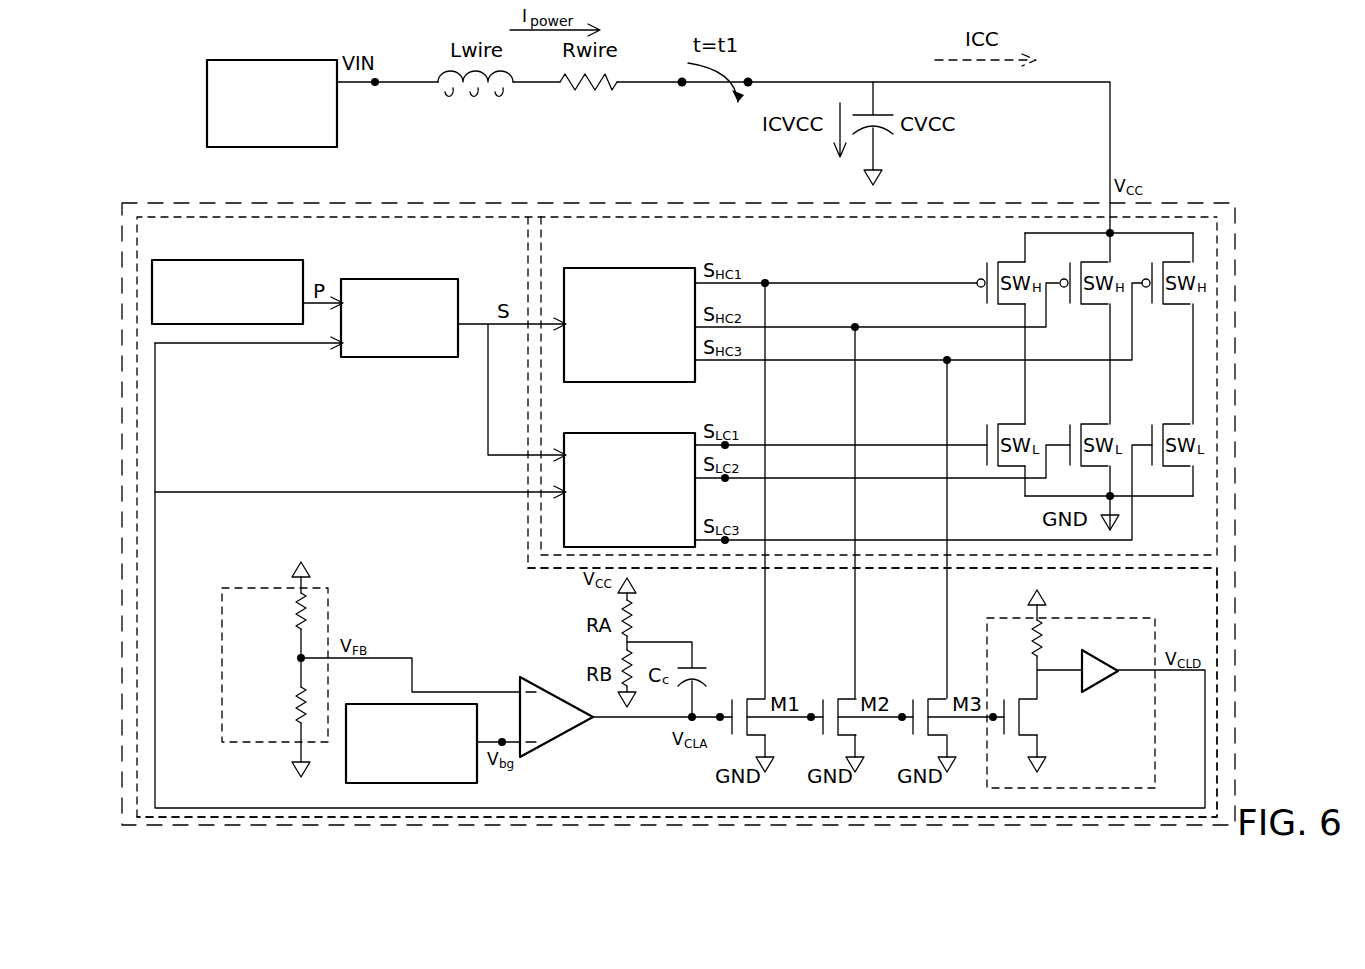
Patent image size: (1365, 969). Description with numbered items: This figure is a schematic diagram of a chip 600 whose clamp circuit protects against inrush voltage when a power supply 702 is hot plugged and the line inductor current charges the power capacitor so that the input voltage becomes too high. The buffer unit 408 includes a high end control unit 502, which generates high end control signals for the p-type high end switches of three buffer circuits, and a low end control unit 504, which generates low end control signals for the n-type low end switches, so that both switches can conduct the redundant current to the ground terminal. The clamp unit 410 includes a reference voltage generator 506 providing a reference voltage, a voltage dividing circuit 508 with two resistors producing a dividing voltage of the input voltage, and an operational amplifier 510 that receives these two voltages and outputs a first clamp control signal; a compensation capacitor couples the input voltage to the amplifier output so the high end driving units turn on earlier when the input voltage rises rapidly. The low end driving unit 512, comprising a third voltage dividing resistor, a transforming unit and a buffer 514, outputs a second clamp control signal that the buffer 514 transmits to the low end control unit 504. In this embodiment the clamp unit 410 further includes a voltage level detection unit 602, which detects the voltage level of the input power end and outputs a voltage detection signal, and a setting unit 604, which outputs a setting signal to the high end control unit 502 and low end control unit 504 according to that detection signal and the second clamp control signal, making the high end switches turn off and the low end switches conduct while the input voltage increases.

The power supply 702 is at (275, 60).
The chip 600 is at (1236, 335).
The buffer unit 408 is at (1220, 385).
The clamp unit 410 is at (1220, 590).
The voltage level detection unit 602 is at (225, 260).
The setting unit 604 is at (393, 279).
The high end control unit 502 is at (630, 268).
The low end control unit 504 is at (630, 433).
The reference voltage generator 506 is at (413, 783).
The voltage dividing circuit 508 is at (222, 677).
The operational amplifier 510 is at (550, 682).
The low end driving unit 512 is at (1080, 684).
The buffer 514 is at (1097, 652).